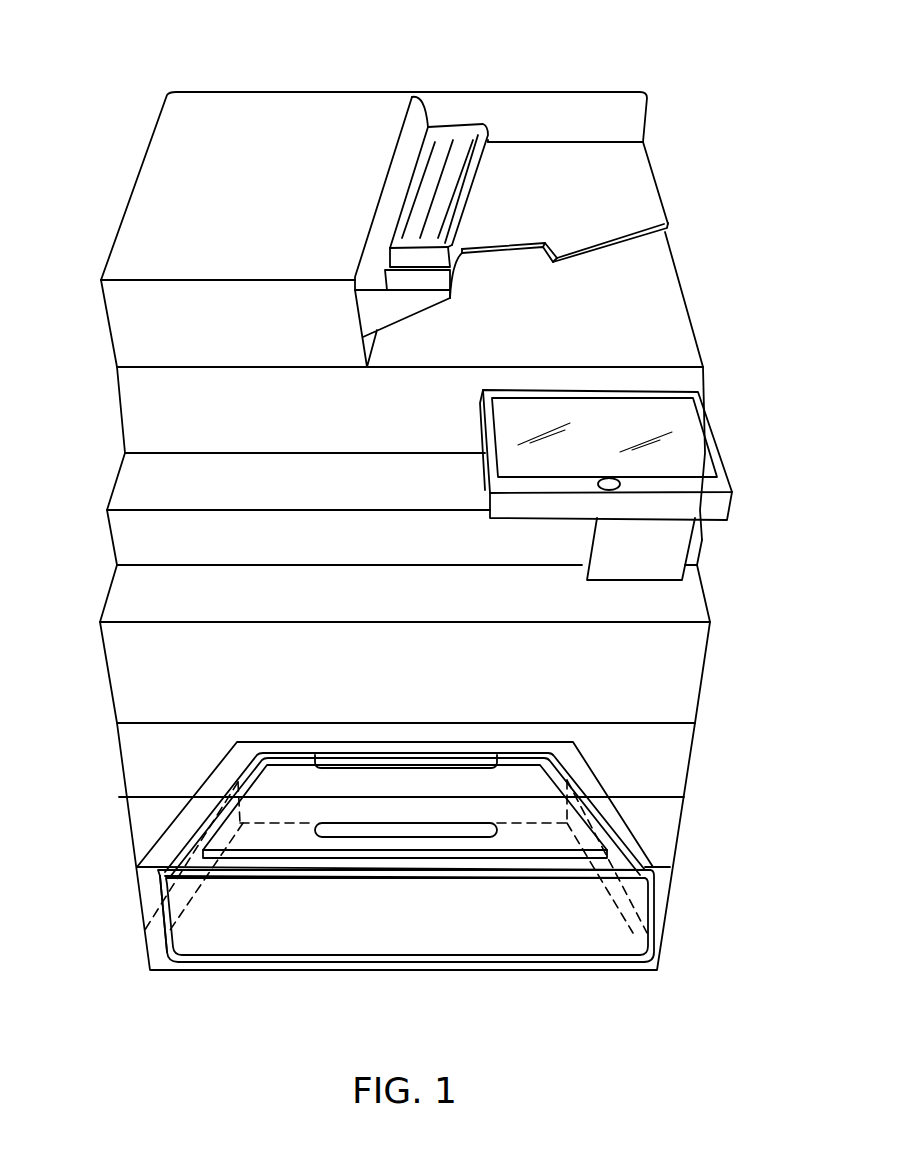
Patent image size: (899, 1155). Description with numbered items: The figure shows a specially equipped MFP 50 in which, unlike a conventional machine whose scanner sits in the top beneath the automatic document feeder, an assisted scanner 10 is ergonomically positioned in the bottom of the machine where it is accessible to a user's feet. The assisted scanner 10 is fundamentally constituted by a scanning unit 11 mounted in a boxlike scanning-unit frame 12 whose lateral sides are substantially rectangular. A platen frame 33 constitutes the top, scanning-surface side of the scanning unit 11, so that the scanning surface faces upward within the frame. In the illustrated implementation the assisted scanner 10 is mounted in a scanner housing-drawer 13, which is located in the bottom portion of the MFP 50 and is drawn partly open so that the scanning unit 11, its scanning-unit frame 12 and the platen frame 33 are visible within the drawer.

The MFP 50 is at (118, 55).
The assisted scanner 10 is at (396, 845).
The platen frame 33 is at (250, 772).
The scanning-unit frame 12 is at (620, 833).
The scanner housing-drawer 13 is at (660, 888).
The scanning unit 11 is at (202, 927).